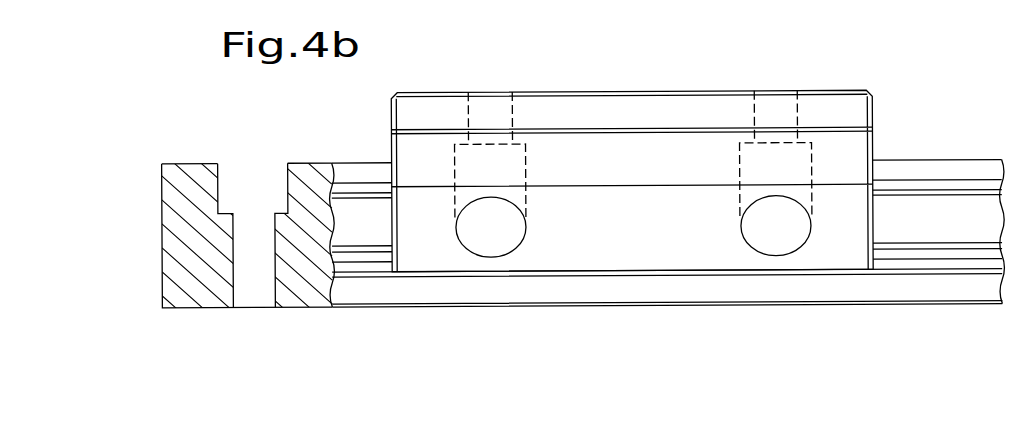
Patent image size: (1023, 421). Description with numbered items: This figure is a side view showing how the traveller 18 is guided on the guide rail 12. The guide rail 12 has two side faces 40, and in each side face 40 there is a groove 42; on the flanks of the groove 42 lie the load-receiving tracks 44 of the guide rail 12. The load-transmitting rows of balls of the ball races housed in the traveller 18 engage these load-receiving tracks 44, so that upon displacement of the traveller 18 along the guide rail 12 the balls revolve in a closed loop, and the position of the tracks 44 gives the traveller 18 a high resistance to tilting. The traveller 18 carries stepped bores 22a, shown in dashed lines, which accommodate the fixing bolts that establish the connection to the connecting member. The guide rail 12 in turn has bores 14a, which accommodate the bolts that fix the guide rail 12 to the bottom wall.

The guide rail 12 is at (188, 171).
The bores 14a is at (246, 296).
The traveller 18 is at (593, 103).
The stepped bores 22a is at (517, 233).
The side faces 40 is at (664, 290).
The groove 42 is at (376, 222).
The load-receiving tracks 44 is at (365, 186).